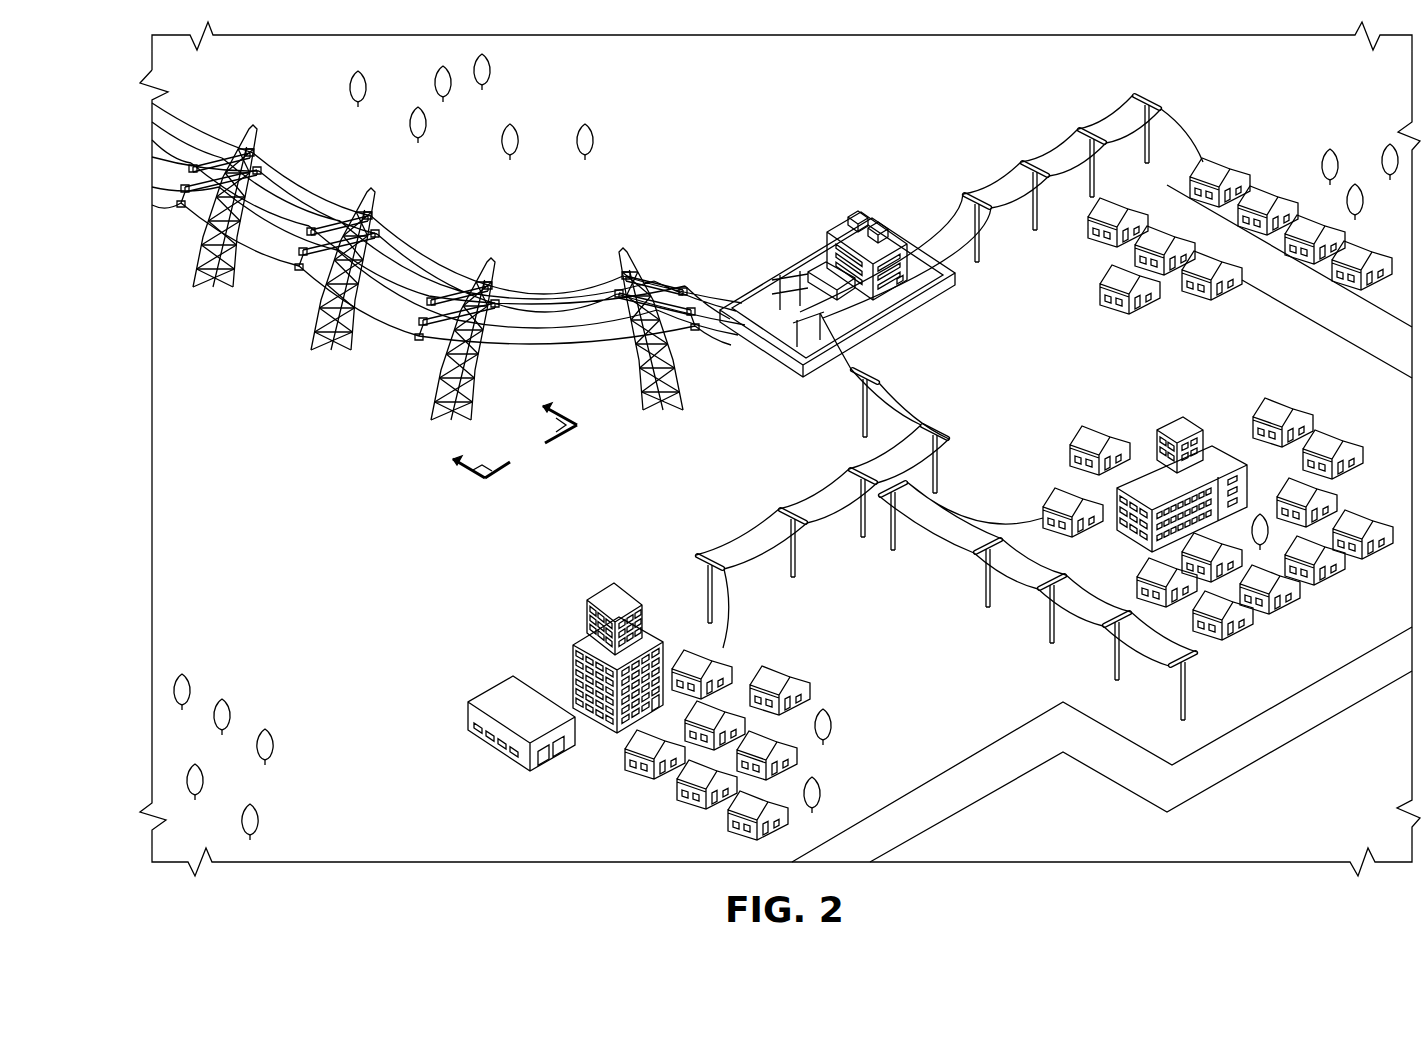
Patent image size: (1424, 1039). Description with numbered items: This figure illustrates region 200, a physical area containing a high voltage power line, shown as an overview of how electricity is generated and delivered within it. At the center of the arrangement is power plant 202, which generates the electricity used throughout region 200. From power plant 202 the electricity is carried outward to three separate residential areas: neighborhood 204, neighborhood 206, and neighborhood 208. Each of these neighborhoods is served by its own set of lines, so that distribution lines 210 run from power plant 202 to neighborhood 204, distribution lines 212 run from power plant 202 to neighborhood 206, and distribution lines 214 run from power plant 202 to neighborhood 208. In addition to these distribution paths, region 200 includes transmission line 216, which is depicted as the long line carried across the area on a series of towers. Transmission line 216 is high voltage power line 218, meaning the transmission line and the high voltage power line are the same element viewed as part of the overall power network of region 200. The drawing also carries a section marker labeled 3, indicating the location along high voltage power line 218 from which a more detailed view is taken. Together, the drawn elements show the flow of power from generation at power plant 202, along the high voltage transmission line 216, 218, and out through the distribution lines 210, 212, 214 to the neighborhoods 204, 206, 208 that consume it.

The region 200 is at (128, 136).
The power plant 202 is at (800, 221).
The neighborhood 204 is at (1289, 164).
The neighborhood 206 is at (1216, 417).
The neighborhood 208 is at (593, 578).
The distribution lines 210 is at (994, 164).
The distribution lines 212 is at (973, 504).
The distribution lines 214 is at (721, 527).
The transmission line 216 is at (458, 266).
The high voltage power line 218 is at (550, 284).
The section line for FIG. 3 is at (500, 432).